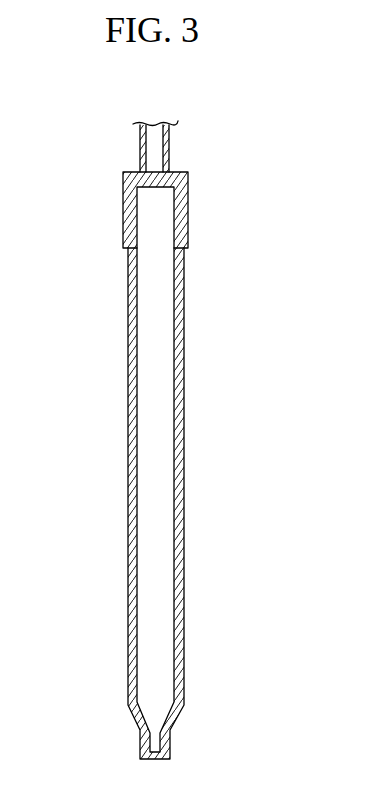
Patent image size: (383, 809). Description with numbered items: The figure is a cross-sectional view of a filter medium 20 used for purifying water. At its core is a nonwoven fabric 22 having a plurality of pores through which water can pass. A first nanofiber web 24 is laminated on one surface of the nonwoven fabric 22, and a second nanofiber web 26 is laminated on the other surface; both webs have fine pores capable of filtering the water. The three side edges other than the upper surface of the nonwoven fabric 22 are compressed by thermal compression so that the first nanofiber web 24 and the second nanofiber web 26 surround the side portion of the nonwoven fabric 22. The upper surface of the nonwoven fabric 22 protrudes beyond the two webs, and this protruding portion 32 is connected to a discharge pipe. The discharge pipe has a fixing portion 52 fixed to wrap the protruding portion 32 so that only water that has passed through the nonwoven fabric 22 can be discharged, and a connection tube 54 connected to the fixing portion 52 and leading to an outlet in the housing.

The filter medium 20 is at (157, 473).
The nonwoven fabric 22 is at (163, 452).
The first nanofiber web 24 is at (132, 428).
The second nanofiber web 26 is at (178, 400).
The protruding portion 32 is at (162, 208).
The fixing portion 52 is at (128, 207).
The connection tube 54 is at (140, 145).